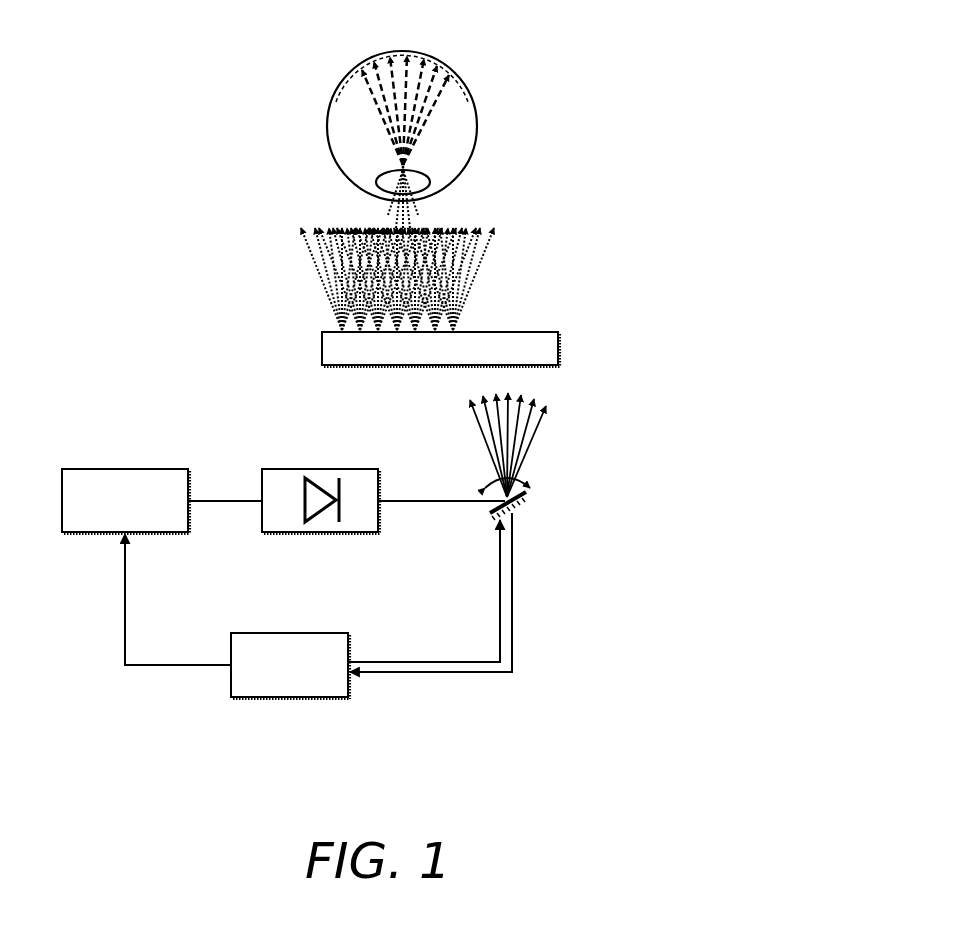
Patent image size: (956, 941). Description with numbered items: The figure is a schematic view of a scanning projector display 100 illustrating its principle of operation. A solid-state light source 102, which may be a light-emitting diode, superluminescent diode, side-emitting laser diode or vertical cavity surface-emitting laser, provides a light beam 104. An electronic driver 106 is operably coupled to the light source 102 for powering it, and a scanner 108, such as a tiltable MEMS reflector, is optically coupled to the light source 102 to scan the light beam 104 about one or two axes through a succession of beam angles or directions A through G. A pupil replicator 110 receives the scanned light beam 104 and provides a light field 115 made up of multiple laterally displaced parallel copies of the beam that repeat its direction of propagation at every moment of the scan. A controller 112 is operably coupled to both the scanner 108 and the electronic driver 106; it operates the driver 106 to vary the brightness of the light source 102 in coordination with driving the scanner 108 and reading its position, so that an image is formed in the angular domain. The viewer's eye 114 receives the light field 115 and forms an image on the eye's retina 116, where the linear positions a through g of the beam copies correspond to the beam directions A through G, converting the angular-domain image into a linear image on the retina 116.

The scanning projector display 100 is at (103, 303).
The solid-state light source 102 is at (291, 469).
The light beam 104 is at (418, 500).
The electronic driver 106 is at (126, 501).
The scanner 108 is at (548, 503).
The pupil replicator 110 is at (558, 348).
The controller 112 is at (290, 666).
The viewer's eye 114 is at (334, 157).
The light field 115 is at (508, 270).
The retina 116 is at (468, 90).